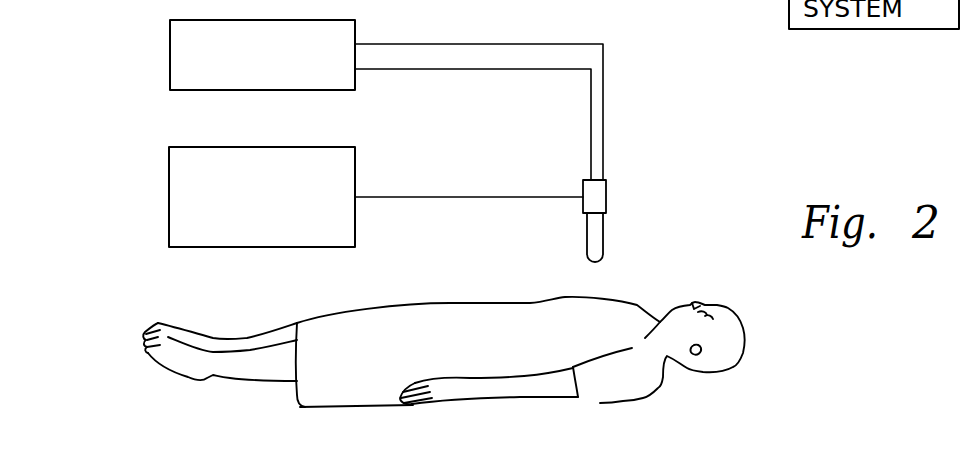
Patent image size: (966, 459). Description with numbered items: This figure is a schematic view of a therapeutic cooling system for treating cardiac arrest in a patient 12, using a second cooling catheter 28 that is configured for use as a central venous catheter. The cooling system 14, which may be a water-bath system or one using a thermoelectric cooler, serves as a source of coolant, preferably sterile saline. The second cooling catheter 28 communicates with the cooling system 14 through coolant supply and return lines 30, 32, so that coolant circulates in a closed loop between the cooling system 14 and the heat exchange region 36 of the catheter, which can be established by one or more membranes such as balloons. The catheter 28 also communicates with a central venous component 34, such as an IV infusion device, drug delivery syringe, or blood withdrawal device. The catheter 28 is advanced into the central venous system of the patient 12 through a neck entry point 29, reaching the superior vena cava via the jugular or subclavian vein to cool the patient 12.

The patient 12 is at (640, 385).
The cooling system 14 is at (170, 47).
The second cooling catheter 28 is at (607, 190).
The neck entry point 29 is at (668, 339).
The coolant supply line 30 is at (412, 44).
The coolant return line 32 is at (413, 69).
The central venous component 34 is at (169, 190).
The heat exchange region 36 is at (604, 240).